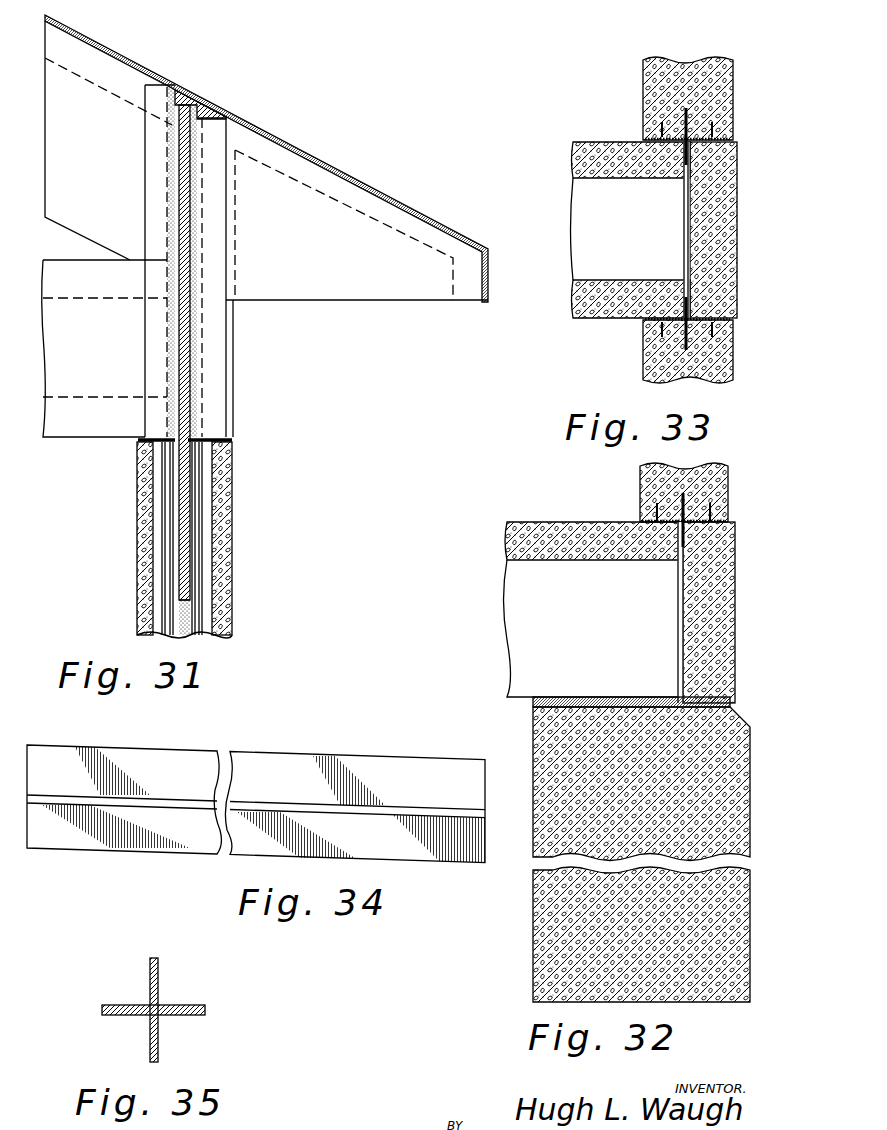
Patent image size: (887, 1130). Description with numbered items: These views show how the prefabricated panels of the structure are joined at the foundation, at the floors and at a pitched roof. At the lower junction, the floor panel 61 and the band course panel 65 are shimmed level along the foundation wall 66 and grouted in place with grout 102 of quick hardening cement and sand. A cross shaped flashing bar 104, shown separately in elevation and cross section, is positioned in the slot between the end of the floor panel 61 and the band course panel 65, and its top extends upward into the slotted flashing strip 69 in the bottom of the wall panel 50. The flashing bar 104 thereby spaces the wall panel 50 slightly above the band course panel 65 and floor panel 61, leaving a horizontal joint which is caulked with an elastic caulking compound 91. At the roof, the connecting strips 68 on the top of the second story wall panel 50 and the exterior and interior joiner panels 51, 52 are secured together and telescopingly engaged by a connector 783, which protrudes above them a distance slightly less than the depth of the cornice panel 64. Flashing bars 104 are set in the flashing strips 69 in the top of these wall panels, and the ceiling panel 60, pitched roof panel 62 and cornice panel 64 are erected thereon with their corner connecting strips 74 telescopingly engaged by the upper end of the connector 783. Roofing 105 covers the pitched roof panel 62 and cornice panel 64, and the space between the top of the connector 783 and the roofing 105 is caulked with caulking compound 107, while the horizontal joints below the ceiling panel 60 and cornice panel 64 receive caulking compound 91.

In FIG. 33, the wall panel 50 is at (710, 93).
In FIG. 32, the wall panel 50 is at (697, 485).
In FIG. 31, the exterior joiner panel 51 is at (223, 547).
In FIG. 31, the interior joiner panel 52 is at (140, 540).
In FIG. 31, the ceiling panel 60 is at (95, 423).
In FIG. 33, the ceiling panel 60 is at (595, 157).
In FIG. 32, the floor panel 61 is at (518, 630).
In FIG. 31, the pitched roof panel 62 is at (93, 52).
In FIG. 31, the cornice panel 64 is at (230, 334).
In FIG. 33, the band course panel 65 is at (713, 227).
In FIG. 32, the band course panel 65 is at (715, 652).
In FIG. 32, the foundation wall 66 is at (733, 807).
In FIG. 31, the connecting strip 68 is at (177, 510).
In FIG. 33, the slotted flashing strip 69 is at (685, 113).
In FIG. 32, the slotted flashing strip 69 is at (682, 493).
In FIG. 31, the corner connecting strip 74 is at (157, 173).
In FIG. 31, the caulking compound 91 is at (140, 441).
In FIG. 33, the caulking compound 91 is at (647, 138).
In FIG. 32, the caulking compound 91 is at (640, 522).
In FIG. 32, the grout 102 is at (727, 703).
In FIG. 33, the cross shaped flashing bar 104 is at (689, 160).
In FIG. 32, the cross shaped flashing bar 104 is at (687, 540).
In FIG. 34, the cross shaped flashing bar 104 is at (283, 772).
In FIG. 35, the cross shaped flashing bar 104 is at (187, 1008).
In FIG. 31, the roofing 105 is at (287, 140).
In FIG. 31, the caulking compound 107 is at (180, 93).
In FIG. 31, the connector 783 is at (183, 375).